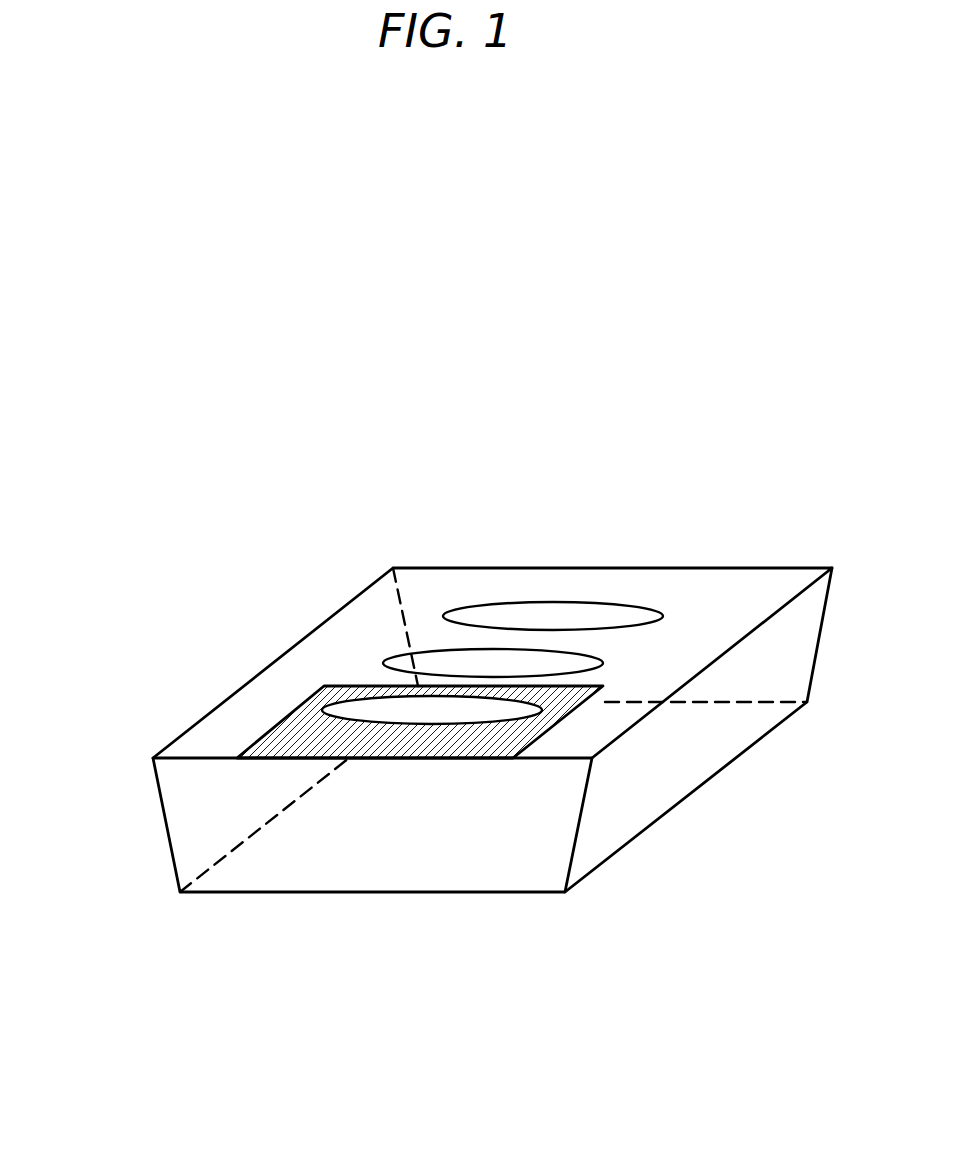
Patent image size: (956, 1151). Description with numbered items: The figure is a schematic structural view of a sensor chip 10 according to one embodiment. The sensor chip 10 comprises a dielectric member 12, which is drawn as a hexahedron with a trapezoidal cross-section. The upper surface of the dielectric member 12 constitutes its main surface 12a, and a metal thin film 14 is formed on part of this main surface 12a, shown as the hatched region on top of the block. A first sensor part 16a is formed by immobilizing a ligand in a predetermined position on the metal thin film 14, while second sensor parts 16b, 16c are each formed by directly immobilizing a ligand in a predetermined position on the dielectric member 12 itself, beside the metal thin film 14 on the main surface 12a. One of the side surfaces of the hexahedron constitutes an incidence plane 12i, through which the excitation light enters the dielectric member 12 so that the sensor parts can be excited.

The sensor chip 10 is at (693, 308).
The dielectric member 12 is at (497, 840).
The main surface 12a is at (258, 712).
The incidence plane 12i is at (630, 805).
The metal thin film 14 is at (300, 760).
The first sensor part 16a is at (396, 713).
The second sensor part 16b is at (465, 662).
The second sensor part 16c is at (558, 618).